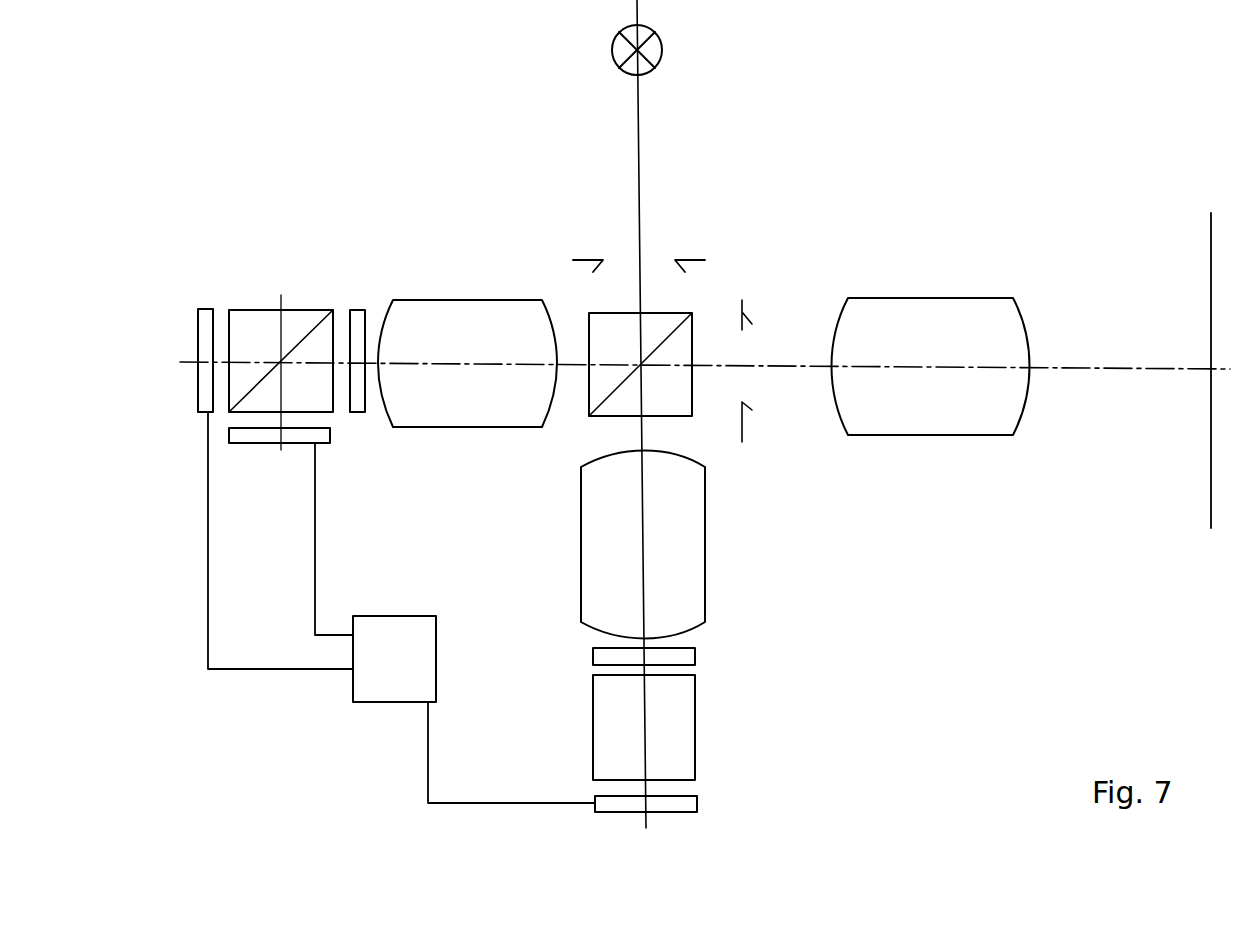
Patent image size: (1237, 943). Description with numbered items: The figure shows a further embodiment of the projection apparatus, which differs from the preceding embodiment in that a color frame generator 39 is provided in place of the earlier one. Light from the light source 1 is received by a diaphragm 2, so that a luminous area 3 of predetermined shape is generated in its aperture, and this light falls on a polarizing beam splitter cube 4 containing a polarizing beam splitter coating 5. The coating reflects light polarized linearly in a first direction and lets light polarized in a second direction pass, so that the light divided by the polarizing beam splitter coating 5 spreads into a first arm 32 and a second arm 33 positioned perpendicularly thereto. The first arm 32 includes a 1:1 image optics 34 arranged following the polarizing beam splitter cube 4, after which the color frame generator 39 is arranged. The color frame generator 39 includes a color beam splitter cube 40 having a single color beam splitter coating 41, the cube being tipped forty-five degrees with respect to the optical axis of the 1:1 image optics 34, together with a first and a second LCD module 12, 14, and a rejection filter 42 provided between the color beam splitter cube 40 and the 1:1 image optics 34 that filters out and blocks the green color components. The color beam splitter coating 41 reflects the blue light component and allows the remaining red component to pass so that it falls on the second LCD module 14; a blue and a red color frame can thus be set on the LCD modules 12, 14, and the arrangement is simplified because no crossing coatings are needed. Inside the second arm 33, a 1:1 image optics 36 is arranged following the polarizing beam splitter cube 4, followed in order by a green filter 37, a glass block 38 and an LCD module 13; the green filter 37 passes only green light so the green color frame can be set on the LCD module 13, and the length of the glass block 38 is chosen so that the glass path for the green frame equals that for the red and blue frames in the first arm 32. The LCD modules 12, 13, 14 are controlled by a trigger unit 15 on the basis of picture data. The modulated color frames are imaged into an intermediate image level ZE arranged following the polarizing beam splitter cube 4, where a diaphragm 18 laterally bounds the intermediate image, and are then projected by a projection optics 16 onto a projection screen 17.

The light source 1 is at (660, 57).
The diaphragm 2 is at (697, 260).
The luminous area 3 is at (652, 258).
The polarizing beam splitter cube 4 is at (679, 306).
The polarizing beam splitter coating 5 is at (672, 338).
The intermediate image level ZE is at (750, 306).
The LCD module 12 is at (331, 437).
The LCD module 13 is at (700, 808).
The LCD module 14 is at (198, 323).
The trigger unit 15 is at (405, 616).
The projection optics 16 is at (965, 298).
The projection screen 17 is at (1211, 237).
The diaphragm 18 is at (742, 425).
The first arm 32 is at (519, 278).
The second arm 33 is at (715, 616).
The 1:1 image optics 34 is at (453, 300).
The 1:1 image optics 36 is at (705, 540).
The green filter 37 is at (700, 660).
The glass block 38 is at (700, 728).
The color frame generator 39 is at (288, 309).
The color beam splitter cube 40 is at (260, 302).
The color beam splitter coating 41 is at (305, 327).
The rejection filter 42 is at (358, 310).